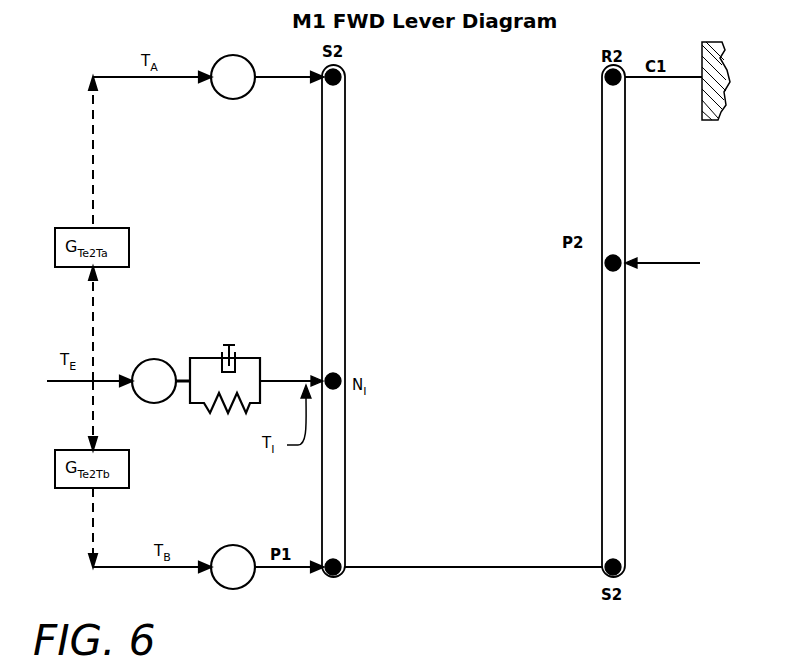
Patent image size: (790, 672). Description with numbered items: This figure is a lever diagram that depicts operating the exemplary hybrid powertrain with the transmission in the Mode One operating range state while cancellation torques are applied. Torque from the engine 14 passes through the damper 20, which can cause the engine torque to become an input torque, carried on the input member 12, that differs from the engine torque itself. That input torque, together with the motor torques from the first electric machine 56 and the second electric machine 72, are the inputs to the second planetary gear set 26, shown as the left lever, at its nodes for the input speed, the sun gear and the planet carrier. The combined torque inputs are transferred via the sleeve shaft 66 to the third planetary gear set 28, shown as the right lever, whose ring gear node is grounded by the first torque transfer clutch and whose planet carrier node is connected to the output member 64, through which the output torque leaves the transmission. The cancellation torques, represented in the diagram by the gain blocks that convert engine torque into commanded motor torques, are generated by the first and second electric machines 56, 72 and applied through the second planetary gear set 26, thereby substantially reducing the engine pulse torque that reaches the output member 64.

The input member 12 is at (294, 362).
The engine 14 is at (157, 414).
The damper 20 is at (200, 362).
The second planetary gear set 26 is at (338, 348).
The third planetary gear set 28 is at (607, 448).
The first electric machine 56 is at (237, 108).
The output member 64 is at (660, 280).
The sleeve shaft 66 is at (438, 567).
The second electric machine 72 is at (238, 600).